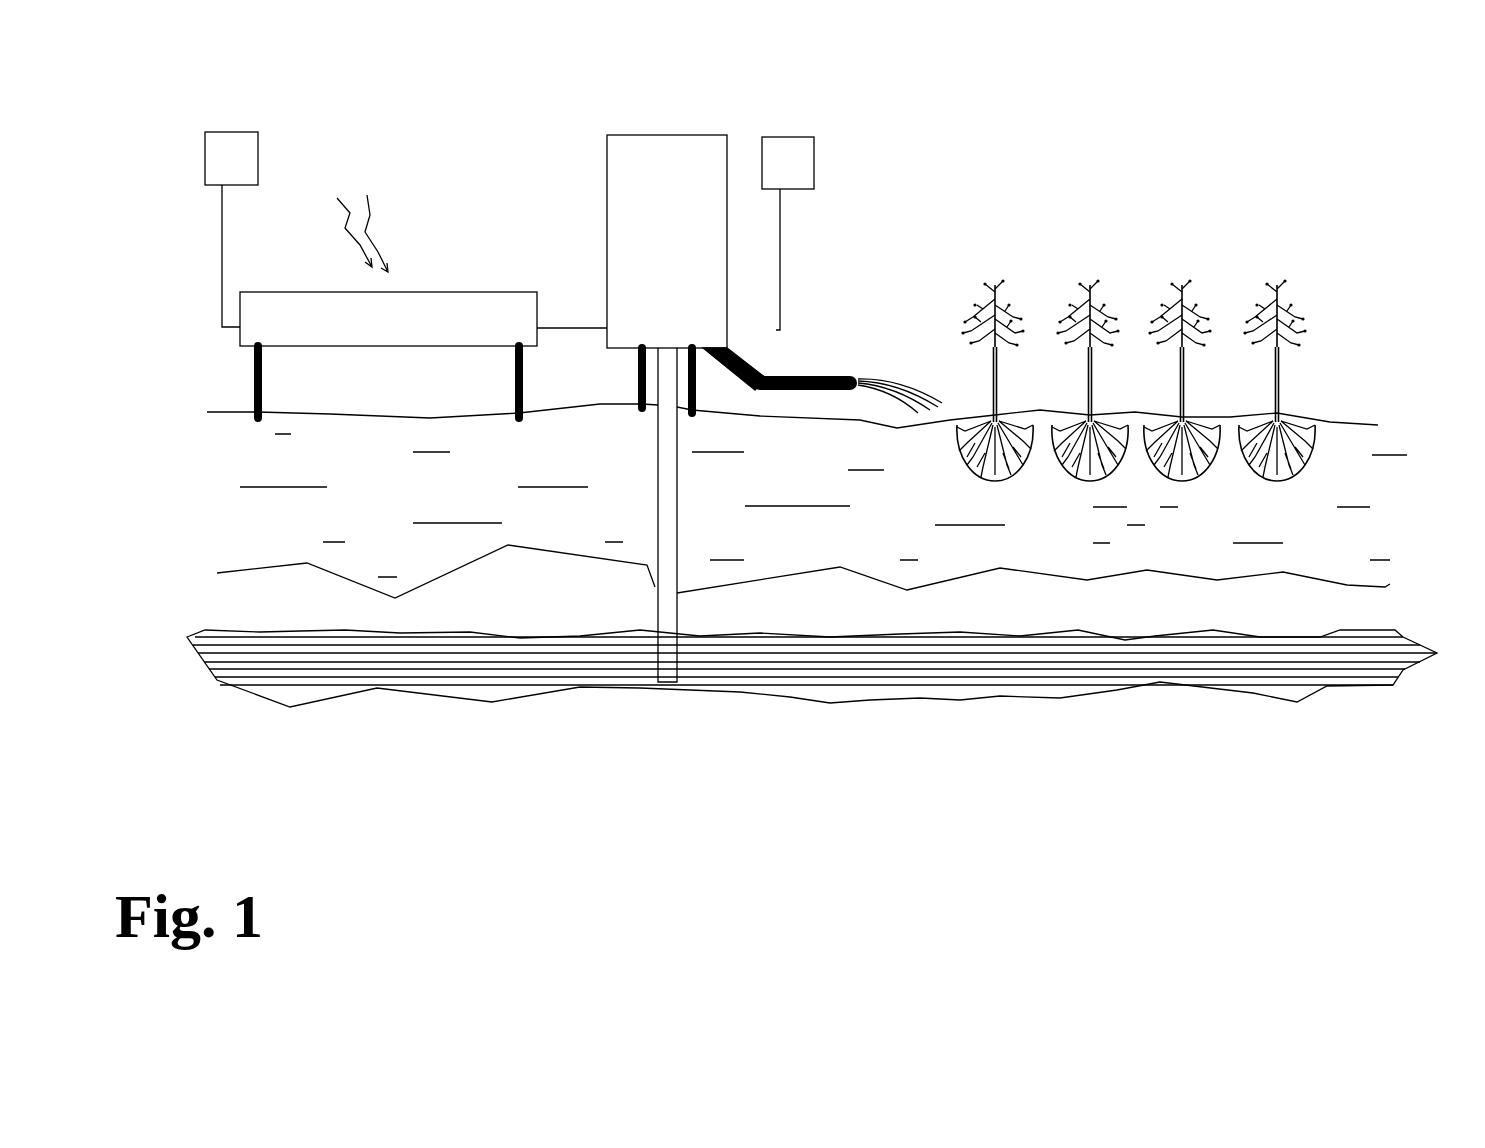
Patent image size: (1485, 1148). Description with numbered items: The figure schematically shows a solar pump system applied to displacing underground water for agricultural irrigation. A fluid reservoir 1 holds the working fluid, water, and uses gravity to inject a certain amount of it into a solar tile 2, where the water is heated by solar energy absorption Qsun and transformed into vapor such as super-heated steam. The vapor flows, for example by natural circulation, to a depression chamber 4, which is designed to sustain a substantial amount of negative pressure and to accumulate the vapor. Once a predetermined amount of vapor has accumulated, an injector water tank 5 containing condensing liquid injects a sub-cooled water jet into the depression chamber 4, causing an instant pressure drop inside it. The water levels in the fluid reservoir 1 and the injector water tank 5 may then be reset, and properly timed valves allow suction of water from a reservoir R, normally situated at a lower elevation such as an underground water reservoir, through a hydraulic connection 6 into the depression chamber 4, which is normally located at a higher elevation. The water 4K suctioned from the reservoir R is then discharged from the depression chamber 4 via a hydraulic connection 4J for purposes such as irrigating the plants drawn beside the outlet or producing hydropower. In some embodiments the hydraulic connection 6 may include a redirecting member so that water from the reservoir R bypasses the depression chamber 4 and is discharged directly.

The fluid reservoir 1 is at (230, 147).
The solar tile 2 is at (458, 320).
The depression chamber 4 is at (620, 195).
The injector water tank 5 is at (803, 180).
The hydraulic connection 4J is at (808, 373).
The water 4K is at (903, 377).
The hydraulic connection 6 is at (665, 485).
The reservoir R is at (943, 683).
The solar energy absorption Qsun is at (351, 202).